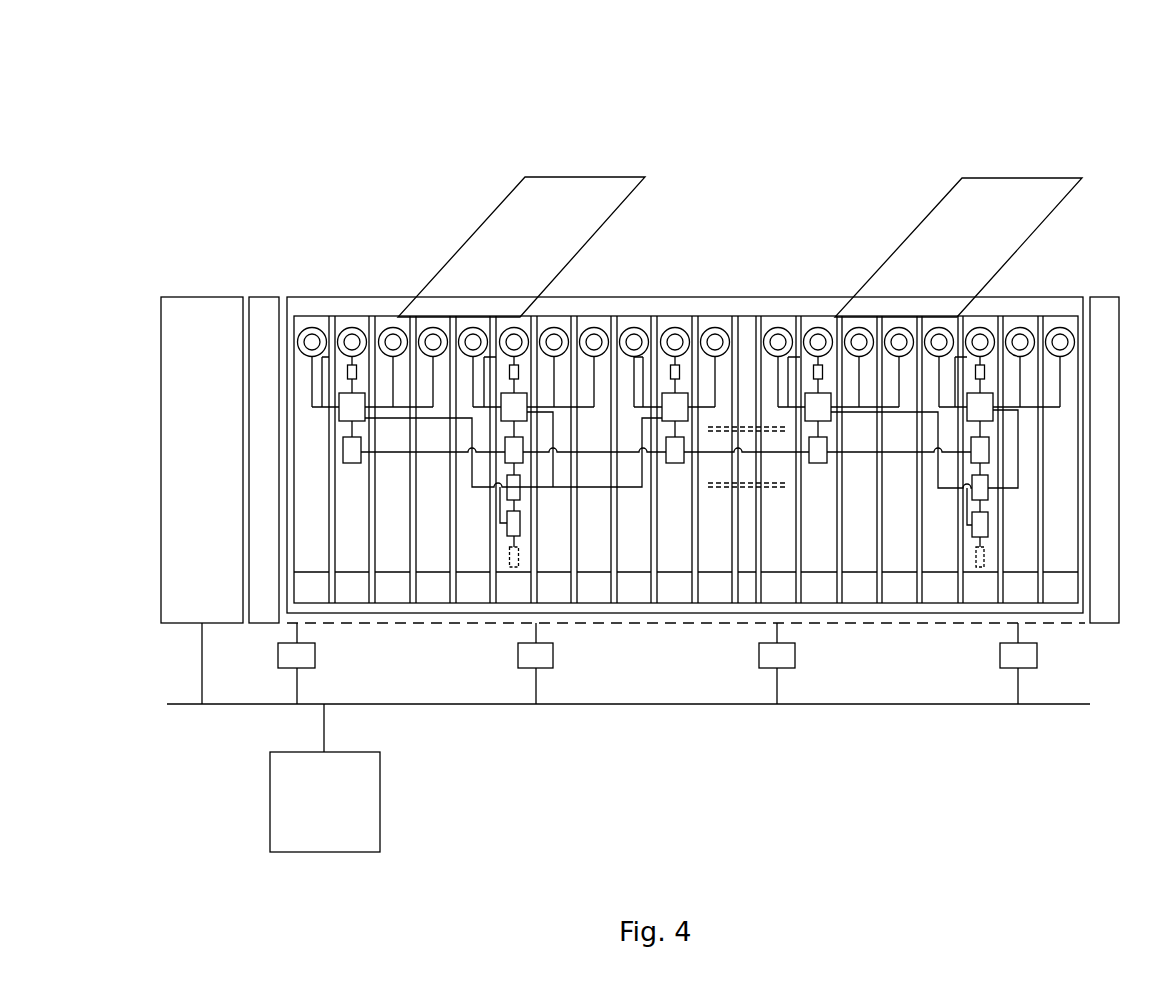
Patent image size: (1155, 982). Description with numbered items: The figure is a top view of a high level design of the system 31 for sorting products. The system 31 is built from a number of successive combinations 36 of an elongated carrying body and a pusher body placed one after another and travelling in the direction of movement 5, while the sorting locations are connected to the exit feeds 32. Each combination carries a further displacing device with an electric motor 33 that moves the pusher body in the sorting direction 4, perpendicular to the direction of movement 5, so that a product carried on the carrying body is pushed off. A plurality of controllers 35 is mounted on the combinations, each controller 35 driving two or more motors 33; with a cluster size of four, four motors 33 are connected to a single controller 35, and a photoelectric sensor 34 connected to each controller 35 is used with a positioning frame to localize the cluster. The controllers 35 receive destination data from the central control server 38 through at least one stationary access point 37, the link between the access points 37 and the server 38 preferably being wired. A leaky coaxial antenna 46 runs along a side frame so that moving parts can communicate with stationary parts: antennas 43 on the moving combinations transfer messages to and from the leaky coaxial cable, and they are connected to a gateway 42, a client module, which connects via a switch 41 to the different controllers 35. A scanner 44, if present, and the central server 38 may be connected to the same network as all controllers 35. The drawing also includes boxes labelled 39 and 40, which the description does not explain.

The system for sorting products 31 is at (905, 113).
The exit feeds 32 is at (565, 192).
The electric motor 33 is at (307, 325).
The photoelectric sensor 34 is at (349, 366).
The controller 35 is at (345, 362).
The combination of an elongated carrying body and a pusher body 36 is at (717, 547).
The stationary access point 37 is at (677, 663).
The central control server 38 is at (363, 805).
The bus line 39 is at (635, 704).
The control unit 40 is at (350, 458).
The switch 41 is at (512, 488).
The gateway 42 is at (980, 527).
The antenna 43 is at (263, 613).
The scanner 44 is at (191, 613).
The leaky coaxial antenna 46 is at (866, 649).
The sorting direction 4 is at (1132, 417).
The direction of movement 5 is at (663, 247).